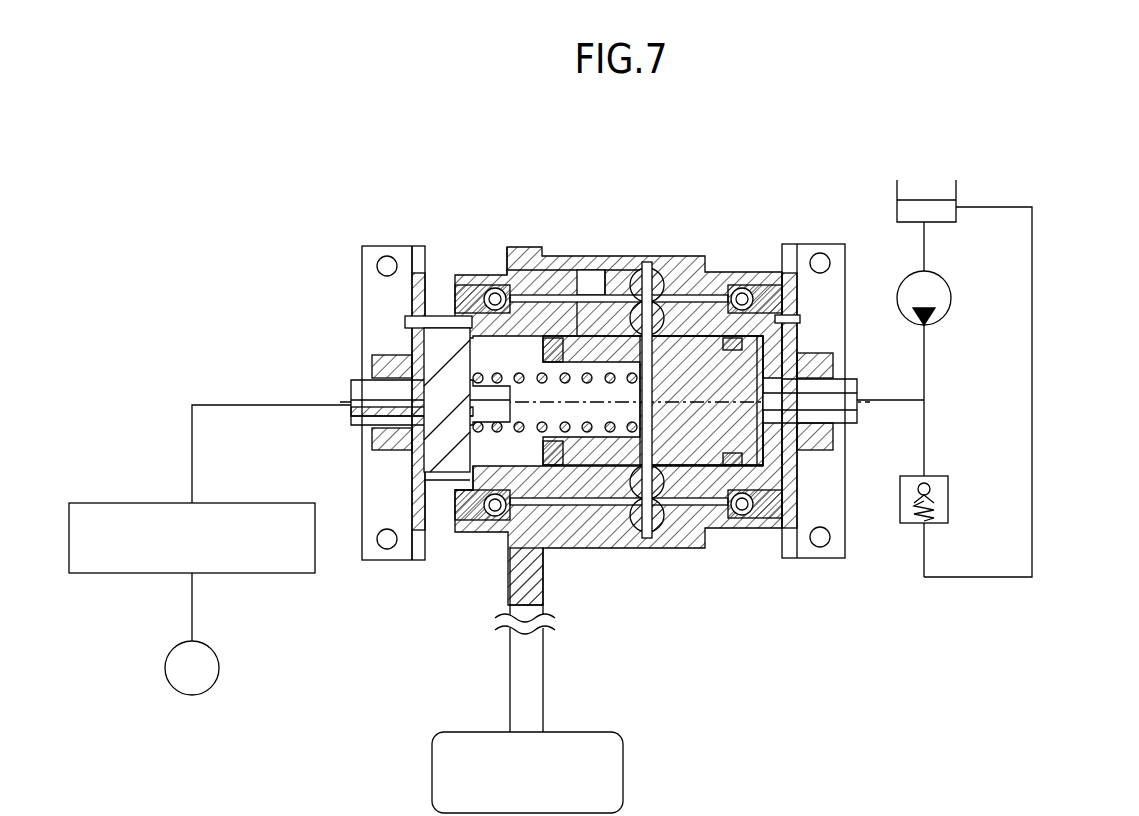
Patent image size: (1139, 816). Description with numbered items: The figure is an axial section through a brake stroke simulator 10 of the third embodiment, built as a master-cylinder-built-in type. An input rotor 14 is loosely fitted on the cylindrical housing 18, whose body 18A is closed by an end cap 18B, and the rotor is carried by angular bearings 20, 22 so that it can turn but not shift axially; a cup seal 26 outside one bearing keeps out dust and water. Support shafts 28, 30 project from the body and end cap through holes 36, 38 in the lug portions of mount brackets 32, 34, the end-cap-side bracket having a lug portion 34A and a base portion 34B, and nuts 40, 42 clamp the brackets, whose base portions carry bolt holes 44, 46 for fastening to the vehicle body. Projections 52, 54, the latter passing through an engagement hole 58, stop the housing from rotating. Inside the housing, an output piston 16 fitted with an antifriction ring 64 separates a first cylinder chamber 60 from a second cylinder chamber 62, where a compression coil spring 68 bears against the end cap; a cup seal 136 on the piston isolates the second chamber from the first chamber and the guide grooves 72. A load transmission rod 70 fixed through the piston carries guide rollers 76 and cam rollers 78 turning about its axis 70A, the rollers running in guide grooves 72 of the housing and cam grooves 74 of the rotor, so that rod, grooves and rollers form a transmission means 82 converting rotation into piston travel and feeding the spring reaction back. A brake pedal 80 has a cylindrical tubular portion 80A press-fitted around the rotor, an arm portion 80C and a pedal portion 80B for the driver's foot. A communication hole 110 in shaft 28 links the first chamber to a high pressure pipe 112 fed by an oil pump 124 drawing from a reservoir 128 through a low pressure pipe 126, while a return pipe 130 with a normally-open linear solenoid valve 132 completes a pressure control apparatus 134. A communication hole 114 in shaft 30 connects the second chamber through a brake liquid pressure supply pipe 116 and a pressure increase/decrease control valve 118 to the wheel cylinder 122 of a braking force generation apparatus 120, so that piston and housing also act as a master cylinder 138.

The brake stroke simulator 10 is at (734, 210).
The input rotor 14 is at (538, 578).
The output piston 16 is at (772, 455).
The housing 18 is at (553, 284).
The body 18A is at (556, 494).
The end cap 18B is at (433, 460).
The angular bearing 20 is at (741, 511).
The angular bearing 22 is at (497, 511).
The cup seal 26 is at (456, 505).
The support shaft 28 is at (863, 381).
The support shaft 30 is at (375, 380).
The mount bracket 32 is at (845, 262).
The mount bracket 34 is at (362, 262).
The lug portion 34A is at (425, 258).
The base portion 34B is at (363, 548).
The hole 36 is at (815, 410).
The hole 38 is at (372, 422).
The nut 40 is at (824, 350).
The nut 42 is at (385, 358).
The bolt hole 44 is at (818, 244).
The bolt hole 46 is at (387, 246).
The projection 52 is at (800, 318).
The projection 54 is at (405, 322).
The engagement hole 58 is at (413, 300).
The first cylinder chamber 60 is at (815, 440).
The second cylinder chamber 62 is at (640, 414).
The antifriction ring 64 is at (710, 256).
The compression coil spring 68 is at (476, 377).
The load transmission rod 70 is at (660, 371).
The axis of load transmission rod 70A is at (647, 250).
The guide groove 72 is at (576, 312).
The cam groove 74 is at (612, 310).
The guide roller 76 is at (616, 498).
The cam roller 78 is at (667, 528).
The brake pedal 80 is at (598, 676).
The cylindrical tubular portion 80A is at (700, 541).
The pedal portion 80B is at (612, 772).
The arm portion 80C is at (517, 665).
The transmission means 82 is at (656, 559).
The communication hole 110 is at (755, 388).
The high pressure pipe 112 is at (930, 379).
The communication hole 114 is at (351, 392).
The brake liquid pressure supply pipe 116 is at (192, 447).
The pressure increase/decrease control valve 118 is at (113, 575).
The braking force generation apparatus 120 is at (250, 628).
The wheel cylinder 122 is at (193, 697).
The oil pump 124 is at (951, 298).
The low pressure pipe 126 is at (926, 246).
The reservoir 128 is at (958, 192).
The return pipe 130 is at (1032, 330).
The linear solenoid valve 132 is at (948, 498).
The pressure control apparatus 134 is at (1035, 254).
The cup seal 136 is at (518, 247).
The master cylinder 138 is at (480, 221).